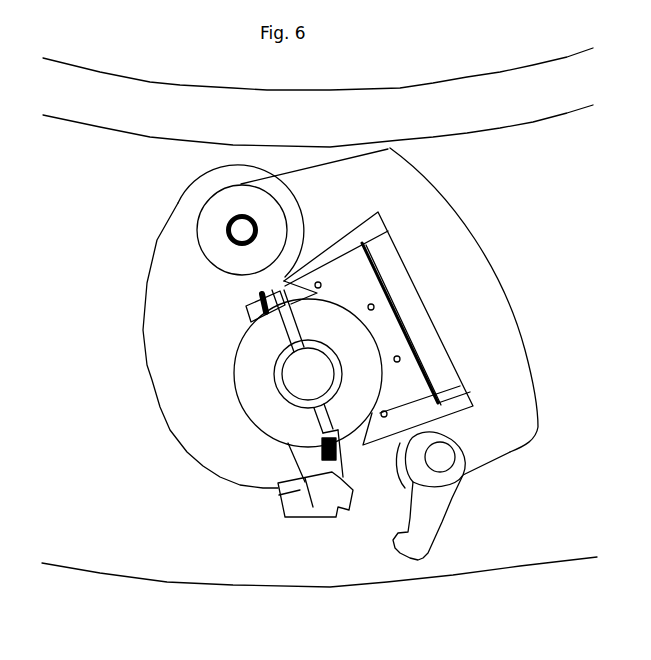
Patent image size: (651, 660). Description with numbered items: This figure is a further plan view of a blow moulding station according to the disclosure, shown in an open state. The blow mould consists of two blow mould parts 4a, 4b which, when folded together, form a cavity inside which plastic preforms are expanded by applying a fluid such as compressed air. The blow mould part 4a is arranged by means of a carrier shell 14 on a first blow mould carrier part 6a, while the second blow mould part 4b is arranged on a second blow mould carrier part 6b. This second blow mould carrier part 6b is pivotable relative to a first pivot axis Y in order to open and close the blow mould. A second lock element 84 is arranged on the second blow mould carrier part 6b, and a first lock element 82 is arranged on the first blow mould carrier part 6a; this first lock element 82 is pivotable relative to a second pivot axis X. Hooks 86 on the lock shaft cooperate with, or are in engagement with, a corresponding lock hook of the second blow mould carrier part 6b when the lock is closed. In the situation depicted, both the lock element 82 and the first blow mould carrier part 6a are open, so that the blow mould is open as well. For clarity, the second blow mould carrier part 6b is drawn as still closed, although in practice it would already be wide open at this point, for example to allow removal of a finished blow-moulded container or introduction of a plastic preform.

The carrier shell 14 is at (357, 288).
The blow mould part 4a is at (363, 372).
The second blow mould part 4b is at (287, 422).
The first blow mould carrier part 6a is at (483, 302).
The second blow mould carrier part 6b is at (180, 388).
The first lock element 82 is at (428, 513).
The second lock element 84 is at (335, 500).
The hooks 86 is at (420, 560).
The second pivot axis X is at (440, 457).
The first pivot axis Y is at (238, 227).